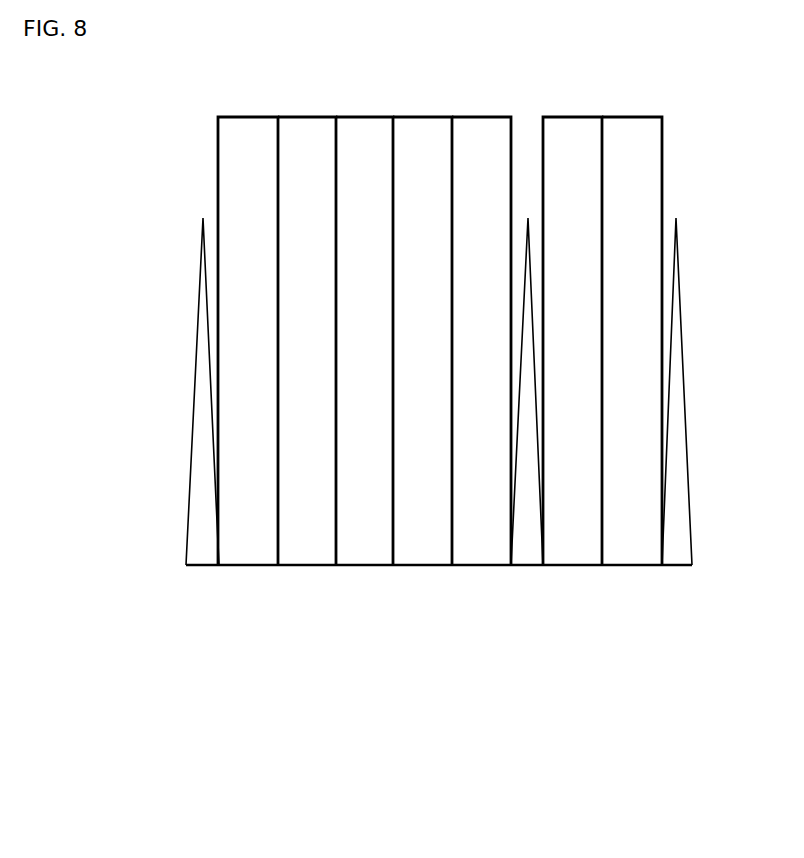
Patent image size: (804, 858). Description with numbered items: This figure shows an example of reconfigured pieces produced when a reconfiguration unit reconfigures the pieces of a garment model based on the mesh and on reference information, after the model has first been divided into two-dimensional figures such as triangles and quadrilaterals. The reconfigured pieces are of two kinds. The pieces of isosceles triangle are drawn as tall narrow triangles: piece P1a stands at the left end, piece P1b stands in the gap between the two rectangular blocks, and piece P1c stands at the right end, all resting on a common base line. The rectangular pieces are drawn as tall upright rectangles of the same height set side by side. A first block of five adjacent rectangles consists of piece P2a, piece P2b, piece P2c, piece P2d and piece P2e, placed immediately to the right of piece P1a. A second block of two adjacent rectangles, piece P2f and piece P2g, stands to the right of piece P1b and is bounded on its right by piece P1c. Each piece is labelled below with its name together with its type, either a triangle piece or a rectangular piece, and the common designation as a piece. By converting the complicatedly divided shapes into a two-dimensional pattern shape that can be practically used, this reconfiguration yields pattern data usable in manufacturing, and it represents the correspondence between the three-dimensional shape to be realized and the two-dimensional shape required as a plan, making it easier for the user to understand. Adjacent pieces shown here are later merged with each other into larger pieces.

The piece P1a is at (201, 566).
The piece P1b is at (529, 566).
The piece P1c is at (677, 566).
The piece P2a is at (247, 566).
The piece P2b is at (307, 566).
The piece P2c is at (367, 566).
The piece P2d is at (423, 566).
The piece P2e is at (485, 566).
The piece P2f is at (573, 566).
The piece P2g is at (635, 566).